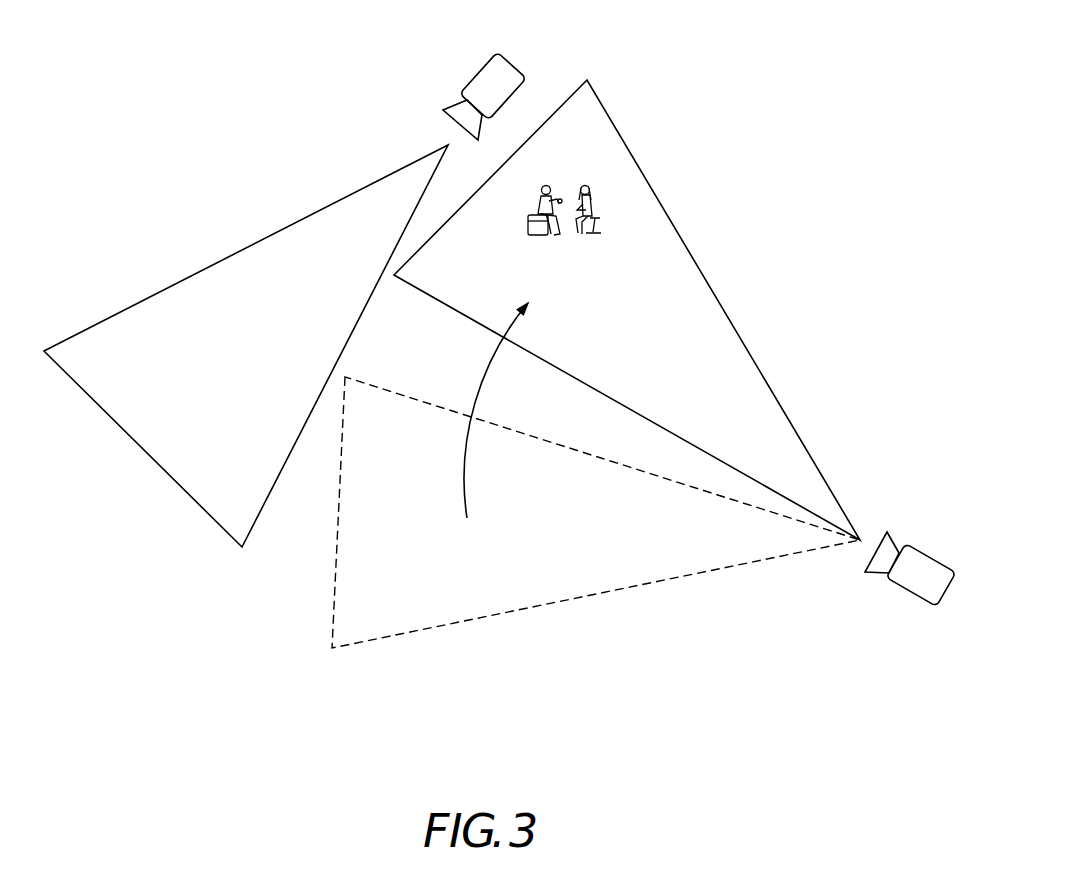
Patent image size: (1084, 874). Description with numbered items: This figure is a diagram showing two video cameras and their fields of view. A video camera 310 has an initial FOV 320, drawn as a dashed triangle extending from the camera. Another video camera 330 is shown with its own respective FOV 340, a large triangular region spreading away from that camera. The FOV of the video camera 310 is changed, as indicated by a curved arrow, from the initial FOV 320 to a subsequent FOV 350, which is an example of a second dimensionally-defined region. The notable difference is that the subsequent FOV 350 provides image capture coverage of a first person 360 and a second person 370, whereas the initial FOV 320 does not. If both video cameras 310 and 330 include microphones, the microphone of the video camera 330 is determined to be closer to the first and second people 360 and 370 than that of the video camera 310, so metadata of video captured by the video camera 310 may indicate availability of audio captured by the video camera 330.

The video camera 310 is at (925, 585).
The initial FOV 320 is at (608, 560).
The video camera 330 is at (493, 85).
The FOV 340 is at (265, 266).
The subsequent FOV 350 is at (697, 322).
The first person 360 is at (548, 185).
The second person 370 is at (600, 198).